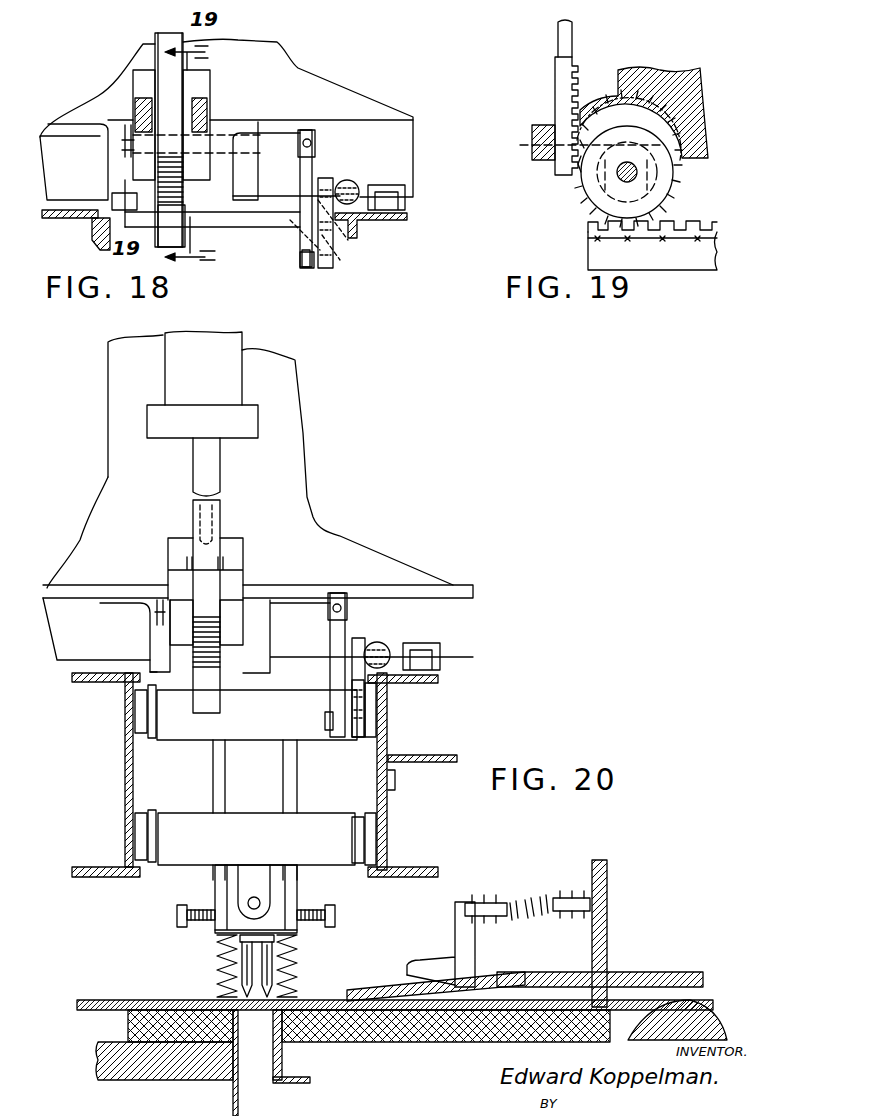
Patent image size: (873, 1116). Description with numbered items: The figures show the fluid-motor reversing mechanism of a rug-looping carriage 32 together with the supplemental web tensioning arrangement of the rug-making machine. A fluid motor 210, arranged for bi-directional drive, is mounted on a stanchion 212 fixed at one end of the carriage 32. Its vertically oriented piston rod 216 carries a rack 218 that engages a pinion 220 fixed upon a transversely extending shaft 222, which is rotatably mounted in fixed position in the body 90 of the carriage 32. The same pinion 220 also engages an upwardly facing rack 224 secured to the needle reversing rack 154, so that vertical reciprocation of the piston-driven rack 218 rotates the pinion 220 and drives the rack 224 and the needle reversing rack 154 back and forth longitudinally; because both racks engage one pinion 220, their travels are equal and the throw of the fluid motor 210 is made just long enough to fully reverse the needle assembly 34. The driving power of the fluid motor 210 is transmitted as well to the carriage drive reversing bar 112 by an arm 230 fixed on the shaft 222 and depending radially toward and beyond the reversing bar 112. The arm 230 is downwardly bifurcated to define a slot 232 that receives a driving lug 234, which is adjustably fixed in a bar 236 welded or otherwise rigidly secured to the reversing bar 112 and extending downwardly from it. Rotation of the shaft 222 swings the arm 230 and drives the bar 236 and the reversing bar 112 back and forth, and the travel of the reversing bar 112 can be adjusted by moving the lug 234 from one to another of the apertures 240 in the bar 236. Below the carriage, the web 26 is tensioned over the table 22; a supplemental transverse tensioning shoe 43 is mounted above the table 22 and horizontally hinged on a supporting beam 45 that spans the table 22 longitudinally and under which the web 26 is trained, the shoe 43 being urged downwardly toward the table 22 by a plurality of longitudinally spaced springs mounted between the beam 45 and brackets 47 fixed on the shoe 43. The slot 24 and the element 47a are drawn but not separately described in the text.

In FIG. 18, the rack 218 is at (165, 99).
In FIG. 19, the rack 218 is at (558, 79).
In FIG. 20, the rack 218 is at (222, 518).
In FIG. 18, the pinion 220 is at (160, 183).
In FIG. 19, the pinion 220 is at (662, 182).
In FIG. 20, the pinion 220 is at (218, 658).
In FIG. 18, the shaft 222 is at (246, 155).
In FIG. 19, the shaft 222 is at (619, 180).
In FIG. 20, the shaft 222 is at (157, 613).
In FIG. 18, the upwardly facing rack 224 is at (215, 198).
In FIG. 19, the upwardly facing rack 224 is at (700, 232).
In FIG. 20, the upwardly facing rack 224 is at (200, 677).
In FIG. 18, the needle reversing rack 154 is at (180, 237).
In FIG. 19, the needle reversing rack 154 is at (588, 255).
In FIG. 20, the needle reversing rack 154 is at (214, 702).
In FIG. 18, the arm 230 is at (300, 188).
In FIG. 18, the slot 232 is at (300, 240).
In FIG. 18, the driving lug 234 is at (300, 261).
In FIG. 18, the bar 236 is at (352, 222).
In FIG. 18, the apertures 240 is at (338, 248).
In FIG. 18, the carriage drive reversing bar 112 is at (360, 188).
In FIG. 19, the body member 90 is at (722, 90).
In FIG. 20, the fluid motor 210 is at (215, 378).
In FIG. 20, the carriage 32 is at (305, 428).
In FIG. 20, the piston rod 216 is at (195, 458).
In FIG. 20, the stanchion 212 is at (300, 525).
In FIG. 20, the needle assembly 34 is at (205, 884).
In FIG. 20, the web 26 is at (305, 995).
In FIG. 20, the table 22 is at (373, 1043).
In FIG. 20, the slot 24 is at (268, 1062).
In FIG. 20, the supplemental transverse tensioning shoe 43 is at (365, 985).
In FIG. 20, the brackets 47 is at (455, 908).
In FIG. 20, the pin bar 47a is at (515, 900).
In FIG. 20, the supporting beam 45 is at (620, 957).